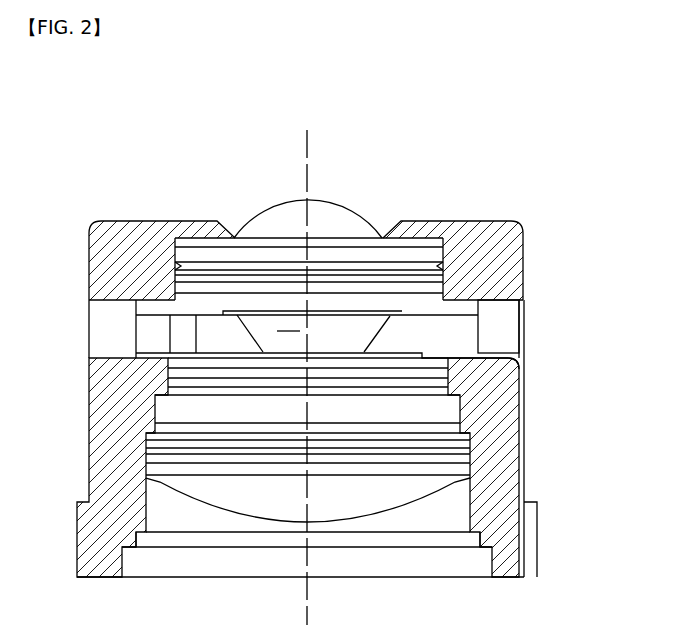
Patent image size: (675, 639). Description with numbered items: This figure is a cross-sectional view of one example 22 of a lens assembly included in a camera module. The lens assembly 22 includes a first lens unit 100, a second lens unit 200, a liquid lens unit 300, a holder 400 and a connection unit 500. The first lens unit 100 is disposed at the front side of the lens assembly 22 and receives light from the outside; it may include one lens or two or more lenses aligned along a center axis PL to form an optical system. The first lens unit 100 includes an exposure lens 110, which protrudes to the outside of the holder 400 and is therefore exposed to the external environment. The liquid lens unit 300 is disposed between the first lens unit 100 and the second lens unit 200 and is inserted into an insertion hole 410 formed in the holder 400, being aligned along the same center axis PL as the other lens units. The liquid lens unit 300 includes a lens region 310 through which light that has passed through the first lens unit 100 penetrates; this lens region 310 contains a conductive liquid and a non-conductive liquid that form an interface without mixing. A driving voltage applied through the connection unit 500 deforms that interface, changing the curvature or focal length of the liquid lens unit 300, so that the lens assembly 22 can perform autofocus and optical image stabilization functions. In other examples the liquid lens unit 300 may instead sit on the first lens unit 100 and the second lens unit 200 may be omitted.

The lens assembly example 22 is at (605, 164).
The first lens unit 100 is at (548, 221).
The exposure lens 110 is at (320, 199).
The second lens unit 200 is at (548, 358).
The liquid lens unit 300 is at (548, 300).
The lens region 310 is at (272, 322).
The holder 400 is at (91, 220).
The insertion hole 410 is at (488, 326).
The connection unit 500 is at (537, 520).
The center axis PL is at (309, 608).